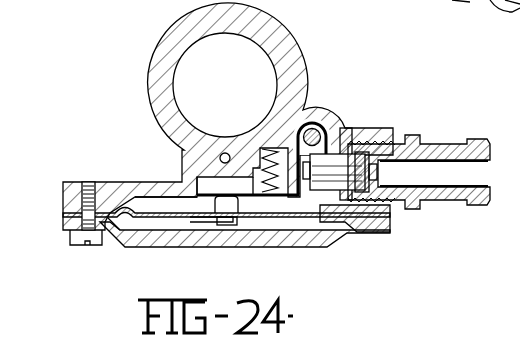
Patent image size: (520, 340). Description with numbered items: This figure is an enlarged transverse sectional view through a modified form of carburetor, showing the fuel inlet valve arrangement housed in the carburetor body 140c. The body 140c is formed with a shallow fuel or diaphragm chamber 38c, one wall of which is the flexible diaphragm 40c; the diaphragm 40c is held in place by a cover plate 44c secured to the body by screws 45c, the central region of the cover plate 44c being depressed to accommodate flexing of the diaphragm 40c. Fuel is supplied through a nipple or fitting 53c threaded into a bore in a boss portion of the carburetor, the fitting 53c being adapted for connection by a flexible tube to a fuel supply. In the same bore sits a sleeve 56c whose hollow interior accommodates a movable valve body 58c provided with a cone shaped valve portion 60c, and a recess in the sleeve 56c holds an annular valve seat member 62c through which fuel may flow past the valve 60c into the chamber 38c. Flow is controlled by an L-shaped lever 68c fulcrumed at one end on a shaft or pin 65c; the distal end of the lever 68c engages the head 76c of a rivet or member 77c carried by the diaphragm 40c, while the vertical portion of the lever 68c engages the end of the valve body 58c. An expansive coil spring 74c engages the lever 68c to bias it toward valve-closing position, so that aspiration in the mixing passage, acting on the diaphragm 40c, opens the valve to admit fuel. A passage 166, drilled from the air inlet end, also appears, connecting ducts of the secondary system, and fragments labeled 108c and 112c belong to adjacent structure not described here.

The carburetor body 140c is at (276, 23).
The passage 166 is at (225, 153).
The shaft or pin 65c is at (316, 131).
The head 76c is at (195, 177).
The expansive coil spring 74c is at (270, 148).
The fuel or diaphragm chamber 38c is at (152, 200).
The flexible diaphragm 40c is at (137, 218).
The rivet or member 77c is at (223, 220).
The screws 45c is at (82, 240).
The cover plate 44c is at (270, 240).
The cone shaped valve portion 60c is at (357, 205).
The L-shaped lever 68c is at (282, 197).
The sleeve 56c is at (356, 140).
The annular valve seat member 62c is at (368, 152).
The movable valve body 58c is at (330, 186).
The nipple or fitting 53c is at (447, 144).
The adjacent body 108c is at (510, 10).
The adjacent passage 112c is at (518, 32).